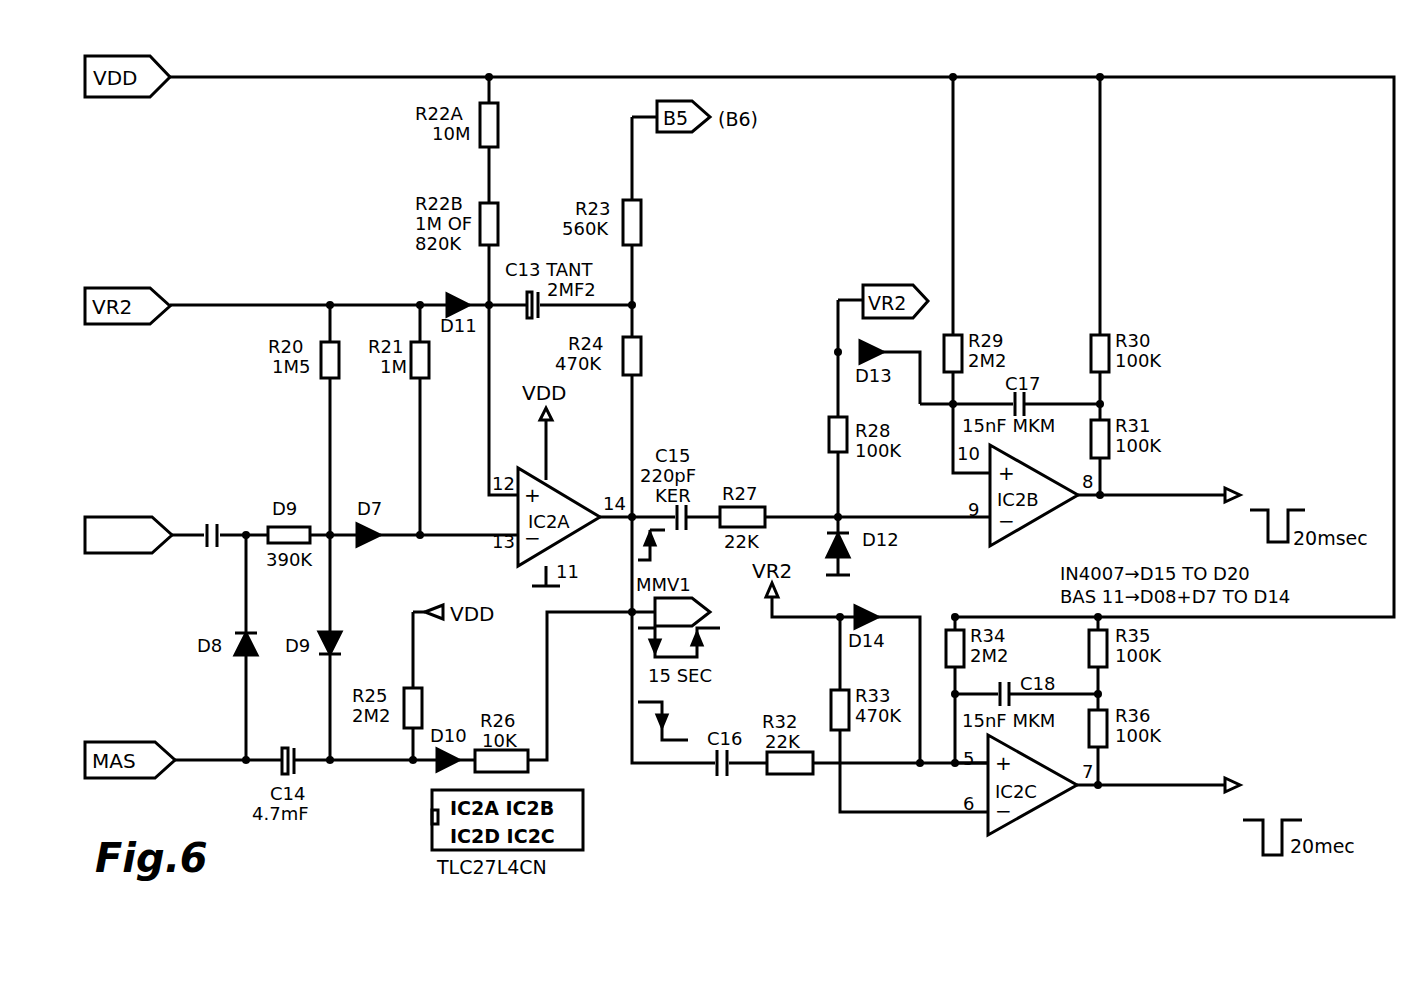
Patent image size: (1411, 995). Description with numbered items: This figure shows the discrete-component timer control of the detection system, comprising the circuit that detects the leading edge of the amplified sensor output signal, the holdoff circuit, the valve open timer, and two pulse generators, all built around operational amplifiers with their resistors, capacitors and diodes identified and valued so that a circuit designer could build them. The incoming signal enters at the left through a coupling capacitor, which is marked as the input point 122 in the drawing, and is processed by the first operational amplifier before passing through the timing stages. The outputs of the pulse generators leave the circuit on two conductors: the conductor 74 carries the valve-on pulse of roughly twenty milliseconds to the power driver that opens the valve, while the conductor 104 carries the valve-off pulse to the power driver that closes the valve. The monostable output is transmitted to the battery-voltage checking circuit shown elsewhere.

The signal input 122 is at (182, 536).
The conductor 104 is at (1158, 497).
The conductor 74 is at (1165, 789).